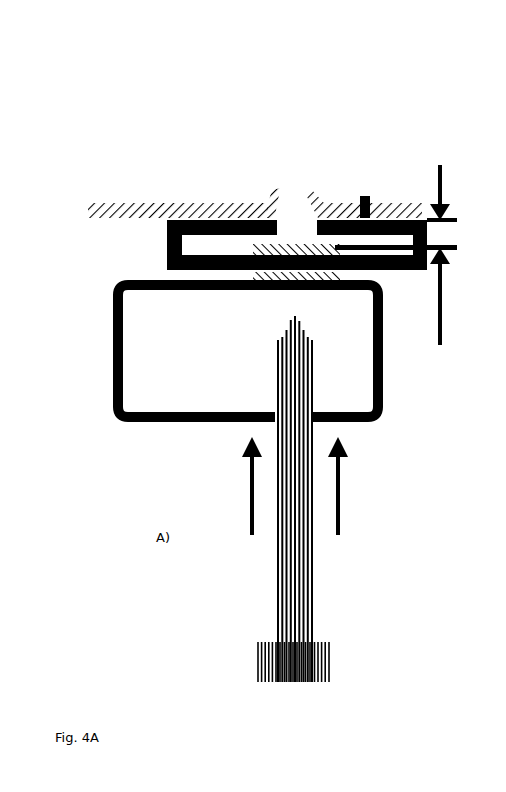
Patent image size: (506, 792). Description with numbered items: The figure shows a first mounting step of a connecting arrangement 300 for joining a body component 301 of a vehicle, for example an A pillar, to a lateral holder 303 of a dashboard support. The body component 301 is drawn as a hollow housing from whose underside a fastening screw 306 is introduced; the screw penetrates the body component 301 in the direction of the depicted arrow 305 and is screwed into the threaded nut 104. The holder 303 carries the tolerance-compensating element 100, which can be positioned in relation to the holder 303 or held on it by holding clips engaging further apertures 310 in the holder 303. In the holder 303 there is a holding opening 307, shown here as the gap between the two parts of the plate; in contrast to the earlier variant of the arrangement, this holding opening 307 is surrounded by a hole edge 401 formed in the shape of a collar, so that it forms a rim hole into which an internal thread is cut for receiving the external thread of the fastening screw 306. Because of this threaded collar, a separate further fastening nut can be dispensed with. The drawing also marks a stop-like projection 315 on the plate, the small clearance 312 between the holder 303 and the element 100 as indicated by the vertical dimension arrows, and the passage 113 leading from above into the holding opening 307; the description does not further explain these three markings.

The tolerance-compensating element 100 is at (138, 245).
The threaded nut 104 is at (313, 293).
The opening 113 is at (300, 228).
The connecting arrangement 300 is at (428, 105).
The body component 301 is at (378, 410).
The lateral holder 303 is at (136, 207).
The arrow 305 is at (342, 492).
The fastening screw 306 is at (303, 612).
The holding opening 307 is at (293, 203).
The further apertures 310 is at (372, 203).
The gap distance 312 is at (450, 238).
The stop pin 315 is at (368, 196).
The hole edge 401 is at (277, 203).